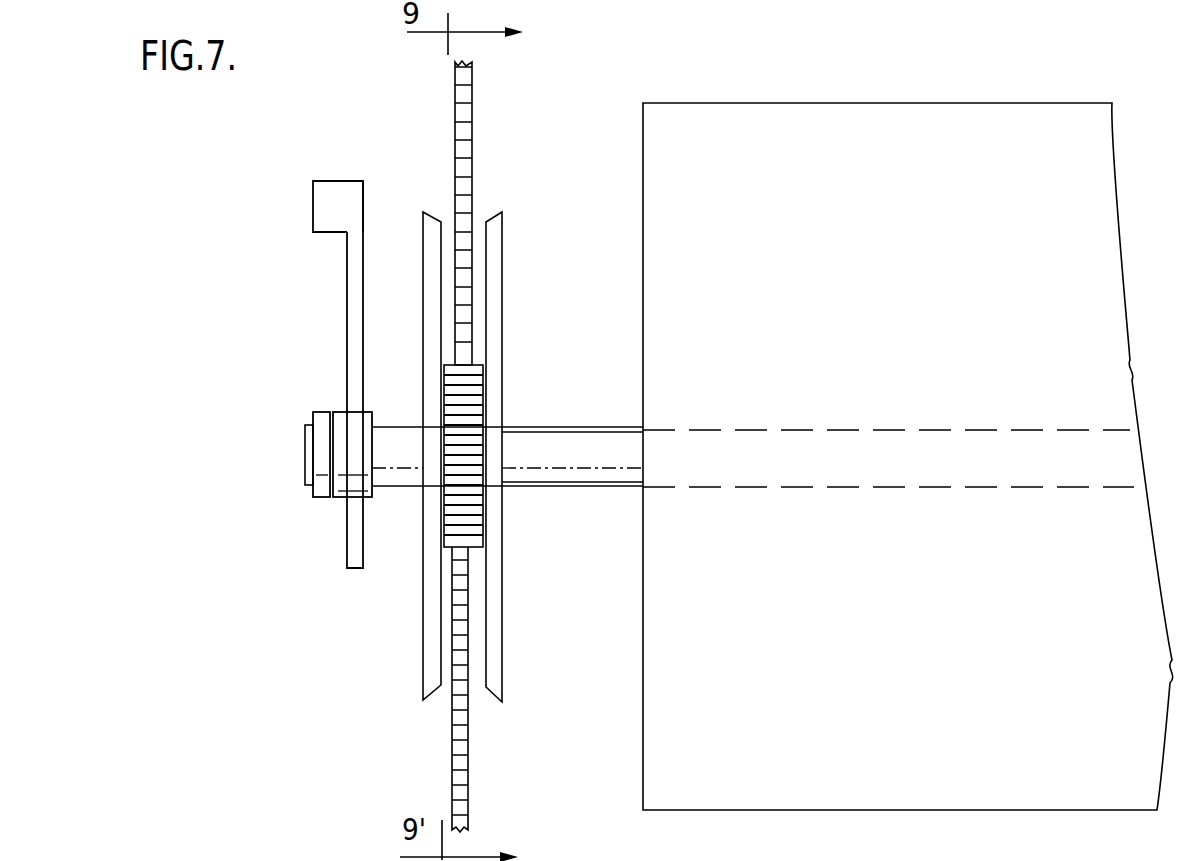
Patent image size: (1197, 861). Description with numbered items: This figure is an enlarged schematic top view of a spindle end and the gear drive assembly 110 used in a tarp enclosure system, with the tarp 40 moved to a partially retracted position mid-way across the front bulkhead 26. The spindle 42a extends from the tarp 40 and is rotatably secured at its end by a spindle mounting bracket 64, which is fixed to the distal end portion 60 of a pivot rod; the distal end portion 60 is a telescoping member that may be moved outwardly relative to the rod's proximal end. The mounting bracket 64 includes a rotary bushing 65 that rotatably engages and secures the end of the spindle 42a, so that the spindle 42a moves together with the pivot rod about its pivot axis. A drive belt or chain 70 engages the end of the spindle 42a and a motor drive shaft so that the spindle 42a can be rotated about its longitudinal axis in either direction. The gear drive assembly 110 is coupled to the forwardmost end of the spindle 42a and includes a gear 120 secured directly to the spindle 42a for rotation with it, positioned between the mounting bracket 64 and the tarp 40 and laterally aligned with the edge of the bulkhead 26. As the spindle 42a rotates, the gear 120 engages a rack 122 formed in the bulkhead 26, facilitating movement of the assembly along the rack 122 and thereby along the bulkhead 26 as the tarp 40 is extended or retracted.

The tarp 40 is at (851, 699).
The spindle 42a is at (580, 486).
The distal end portion 60 is at (340, 183).
The spindle mounting bracket 64 is at (336, 306).
The drive belt or chain 70 is at (318, 498).
The rotary bushing 65 is at (337, 498).
The gear drive assembly 110 is at (403, 642).
The gear 120 is at (496, 297).
The rack 122 is at (472, 125).
The front bulkhead 26 is at (460, 808).